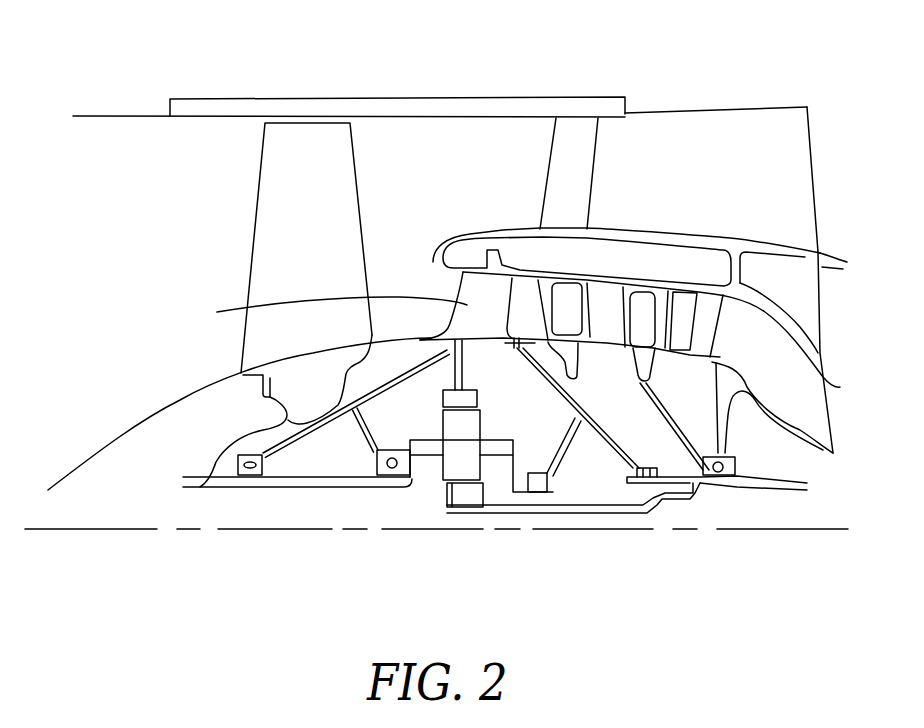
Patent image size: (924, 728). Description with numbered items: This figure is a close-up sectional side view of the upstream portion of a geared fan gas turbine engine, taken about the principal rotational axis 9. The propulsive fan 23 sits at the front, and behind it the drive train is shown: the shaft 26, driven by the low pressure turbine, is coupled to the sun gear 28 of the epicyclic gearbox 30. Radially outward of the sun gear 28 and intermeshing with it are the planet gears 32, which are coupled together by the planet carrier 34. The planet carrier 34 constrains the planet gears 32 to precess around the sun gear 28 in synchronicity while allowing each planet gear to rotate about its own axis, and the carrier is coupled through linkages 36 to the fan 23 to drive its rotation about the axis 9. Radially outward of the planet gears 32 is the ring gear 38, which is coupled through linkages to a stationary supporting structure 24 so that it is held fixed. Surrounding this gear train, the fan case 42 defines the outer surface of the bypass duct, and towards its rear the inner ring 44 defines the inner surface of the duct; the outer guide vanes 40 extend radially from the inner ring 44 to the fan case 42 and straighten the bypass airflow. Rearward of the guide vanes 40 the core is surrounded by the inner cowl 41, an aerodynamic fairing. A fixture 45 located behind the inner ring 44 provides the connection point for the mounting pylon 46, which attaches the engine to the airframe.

The principal rotational axis 9 is at (138, 530).
The propulsive fan 23 is at (268, 230).
The stationary supporting structure 24 is at (329, 312).
The shaft 26 is at (598, 505).
The sun gear 28 is at (463, 497).
The epicyclic gearbox 30 is at (430, 482).
The planet gears 32 is at (438, 483).
The planet carrier 34 is at (512, 467).
The linkages 36 is at (420, 478).
The ring gear 38 is at (440, 403).
The outer guide vanes 40 is at (585, 172).
The inner cowl 41 is at (802, 252).
The fan case 42 is at (380, 113).
The inner ring 44 is at (565, 235).
The fixture 45 is at (628, 233).
The mounting pylon 46 is at (737, 186).